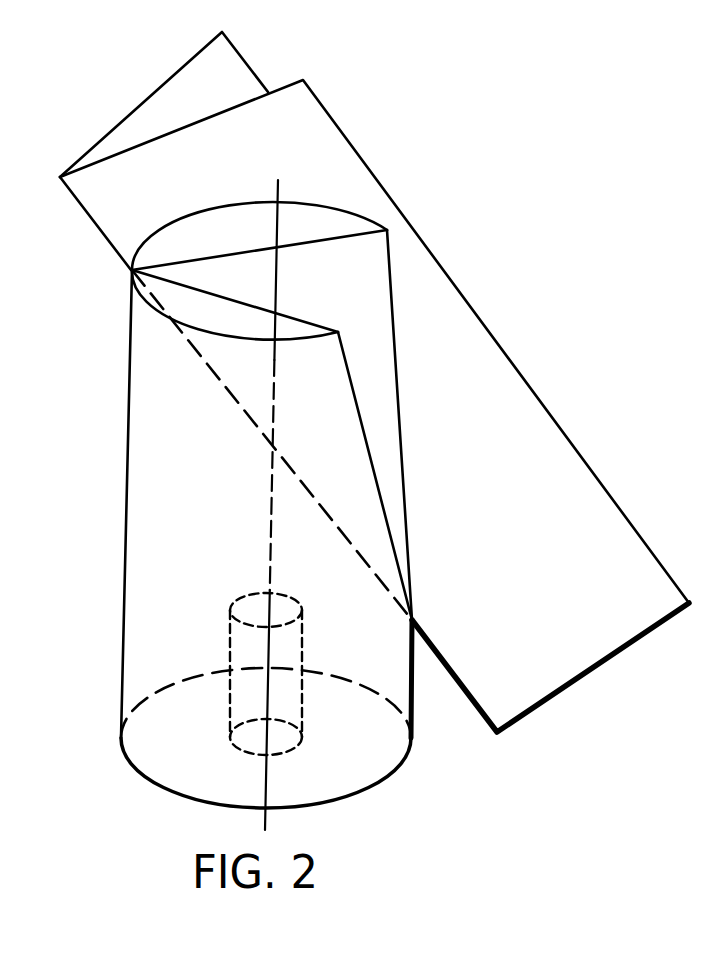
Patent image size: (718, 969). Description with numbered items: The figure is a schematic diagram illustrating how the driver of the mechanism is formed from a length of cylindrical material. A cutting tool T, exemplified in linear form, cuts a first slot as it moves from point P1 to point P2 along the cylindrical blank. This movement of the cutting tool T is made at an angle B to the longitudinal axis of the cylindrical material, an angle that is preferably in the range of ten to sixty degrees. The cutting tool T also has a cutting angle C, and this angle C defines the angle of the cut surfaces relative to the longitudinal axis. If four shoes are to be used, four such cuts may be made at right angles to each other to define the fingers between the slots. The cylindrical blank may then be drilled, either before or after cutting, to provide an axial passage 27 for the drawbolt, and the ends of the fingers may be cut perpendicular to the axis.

The axial passage 27 is at (228, 697).
The point P1 is at (393, 625).
The point P2 is at (109, 275).
The angle B is at (318, 365).
The cutting angle C is at (112, 52).
The cutting tool T is at (560, 660).